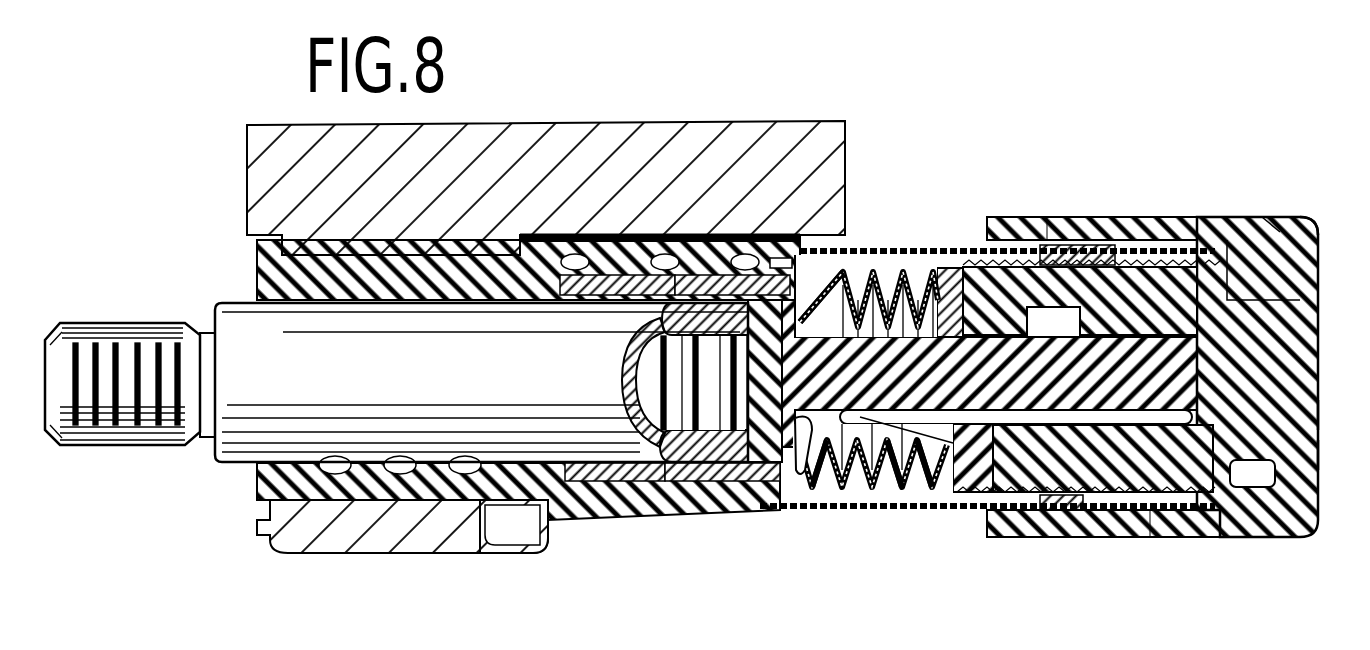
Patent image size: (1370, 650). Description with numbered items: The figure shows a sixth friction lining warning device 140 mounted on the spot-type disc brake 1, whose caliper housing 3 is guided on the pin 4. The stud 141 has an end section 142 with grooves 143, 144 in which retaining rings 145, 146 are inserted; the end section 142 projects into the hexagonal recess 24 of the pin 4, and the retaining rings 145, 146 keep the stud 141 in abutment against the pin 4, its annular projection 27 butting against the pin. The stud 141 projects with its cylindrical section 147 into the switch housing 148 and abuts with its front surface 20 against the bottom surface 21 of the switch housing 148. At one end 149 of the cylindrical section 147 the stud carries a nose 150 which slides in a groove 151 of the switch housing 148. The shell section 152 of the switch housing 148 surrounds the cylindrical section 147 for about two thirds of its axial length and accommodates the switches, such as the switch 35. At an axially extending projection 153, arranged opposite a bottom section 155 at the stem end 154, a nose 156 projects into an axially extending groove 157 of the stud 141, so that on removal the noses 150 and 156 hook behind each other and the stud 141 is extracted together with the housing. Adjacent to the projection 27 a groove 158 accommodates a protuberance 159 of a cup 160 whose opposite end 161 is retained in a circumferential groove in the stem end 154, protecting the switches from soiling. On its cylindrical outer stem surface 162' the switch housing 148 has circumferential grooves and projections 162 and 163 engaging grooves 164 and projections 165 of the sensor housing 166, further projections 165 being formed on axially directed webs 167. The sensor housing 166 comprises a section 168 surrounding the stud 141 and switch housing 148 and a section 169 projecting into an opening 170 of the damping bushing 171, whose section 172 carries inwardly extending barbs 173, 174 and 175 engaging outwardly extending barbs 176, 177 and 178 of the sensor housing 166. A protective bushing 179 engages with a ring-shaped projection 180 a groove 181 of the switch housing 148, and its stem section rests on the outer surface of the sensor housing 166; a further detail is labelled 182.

The spot-type disc brake 1 is at (198, 178).
The caliper housing 3 is at (335, 535).
The pin 4 is at (230, 452).
The front surface 20 is at (1318, 420).
The bottom surface 21 is at (1318, 450).
The hexagonal recess 24 is at (630, 402).
The projection 27 is at (803, 478).
The switch 35 is at (1078, 320).
The friction lining warning device 140 is at (1272, 185).
The stud 141 is at (1040, 370).
The end section 142 is at (660, 482).
The groove 143 is at (690, 343).
The groove 144 is at (650, 378).
The retaining ring 145 is at (700, 482).
The retaining ring 146 is at (755, 475).
The cylindrical section 147 is at (985, 494).
The switch housing 148 is at (1300, 470).
The end 149 is at (1255, 505).
The nose 150 is at (1110, 425).
The groove 151 is at (1238, 538).
The shell section 152 is at (952, 248).
The projection 153 is at (878, 500).
The stem end 154 is at (905, 272).
The bottom section 155 is at (1300, 335).
The nose 156 is at (900, 462).
The groove 157 is at (918, 492).
The groove 158 is at (848, 472).
The protuberance 159 is at (828, 505).
The cup 160 is at (855, 288).
The end 161 is at (930, 290).
The grooves 162 is at (1086, 543).
The cylindrical outer stem surface 162' is at (1079, 559).
The projections 163 is at (1195, 493).
The grooves 164 is at (1092, 255).
The projections 165 is at (1060, 244).
The sensor housing 166 is at (960, 512).
The webs 167 is at (1033, 233).
The section 168 is at (972, 268).
The section 169 is at (560, 300).
The opening 170 is at (540, 238).
The damping bushing 171 is at (480, 515).
The section 172 is at (615, 515).
The barb 173 is at (625, 276).
The barb 174 is at (700, 276).
The barb 175 is at (780, 258).
The barb 176 is at (575, 256).
The barb 177 is at (665, 256).
The barb 178 is at (745, 256).
The protective bushing 179 is at (1310, 224).
The ring-shaped projection 180 is at (1280, 228).
The groove 181 is at (1292, 300).
The wall portion 182 is at (1015, 248).